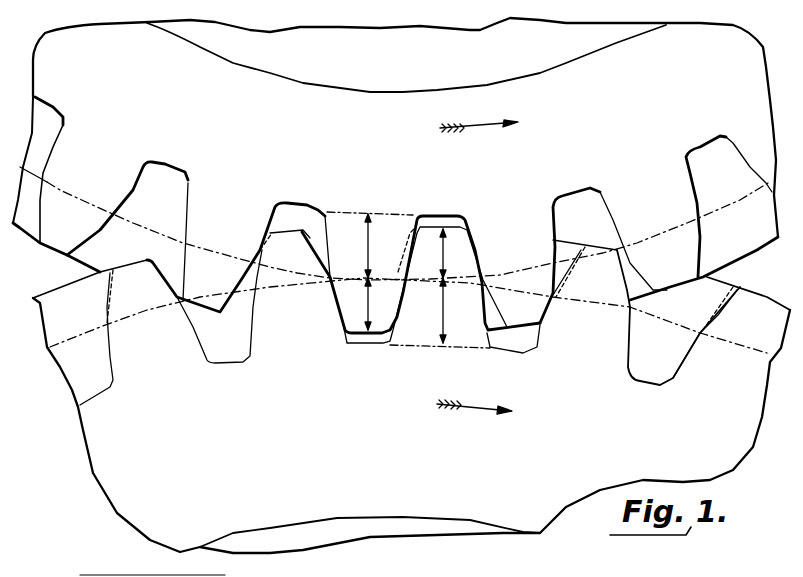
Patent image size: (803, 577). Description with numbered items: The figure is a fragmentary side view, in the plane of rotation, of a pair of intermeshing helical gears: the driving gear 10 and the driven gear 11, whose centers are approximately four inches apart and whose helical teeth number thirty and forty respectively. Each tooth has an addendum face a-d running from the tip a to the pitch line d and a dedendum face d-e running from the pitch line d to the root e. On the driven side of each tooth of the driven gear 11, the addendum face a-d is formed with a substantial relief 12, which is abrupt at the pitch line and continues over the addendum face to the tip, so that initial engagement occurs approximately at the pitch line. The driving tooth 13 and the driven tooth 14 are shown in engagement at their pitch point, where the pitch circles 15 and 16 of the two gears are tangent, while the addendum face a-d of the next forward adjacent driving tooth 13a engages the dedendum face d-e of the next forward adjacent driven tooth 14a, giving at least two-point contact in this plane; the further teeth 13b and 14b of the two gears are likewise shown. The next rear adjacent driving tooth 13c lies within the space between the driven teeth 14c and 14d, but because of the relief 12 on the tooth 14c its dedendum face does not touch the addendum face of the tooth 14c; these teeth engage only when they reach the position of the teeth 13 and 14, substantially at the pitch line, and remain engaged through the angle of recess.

The driving gear 10 is at (395, 149).
The driven gear 11 is at (411, 415).
The relief 12 is at (712, 310).
The driving tooth 13 is at (413, 242).
The next forward adjacent driving tooth 13a is at (575, 270).
The driving tooth 13b is at (702, 218).
The next rear adjacent driving tooth 13c is at (164, 262).
The driven tooth 14 is at (488, 320).
The next forward adjacent driven tooth 14a is at (646, 312).
The driven tooth 14b is at (716, 338).
The driven tooth 14c is at (236, 276).
The driven tooth 14d is at (87, 314).
The pitch circle of driving gear 15 is at (545, 263).
The pitch circle of driven gear 16 is at (565, 300).
The tooth tip point a is at (410, 288).
The pitch line point d is at (411, 259).
The tooth root point e is at (408, 274).